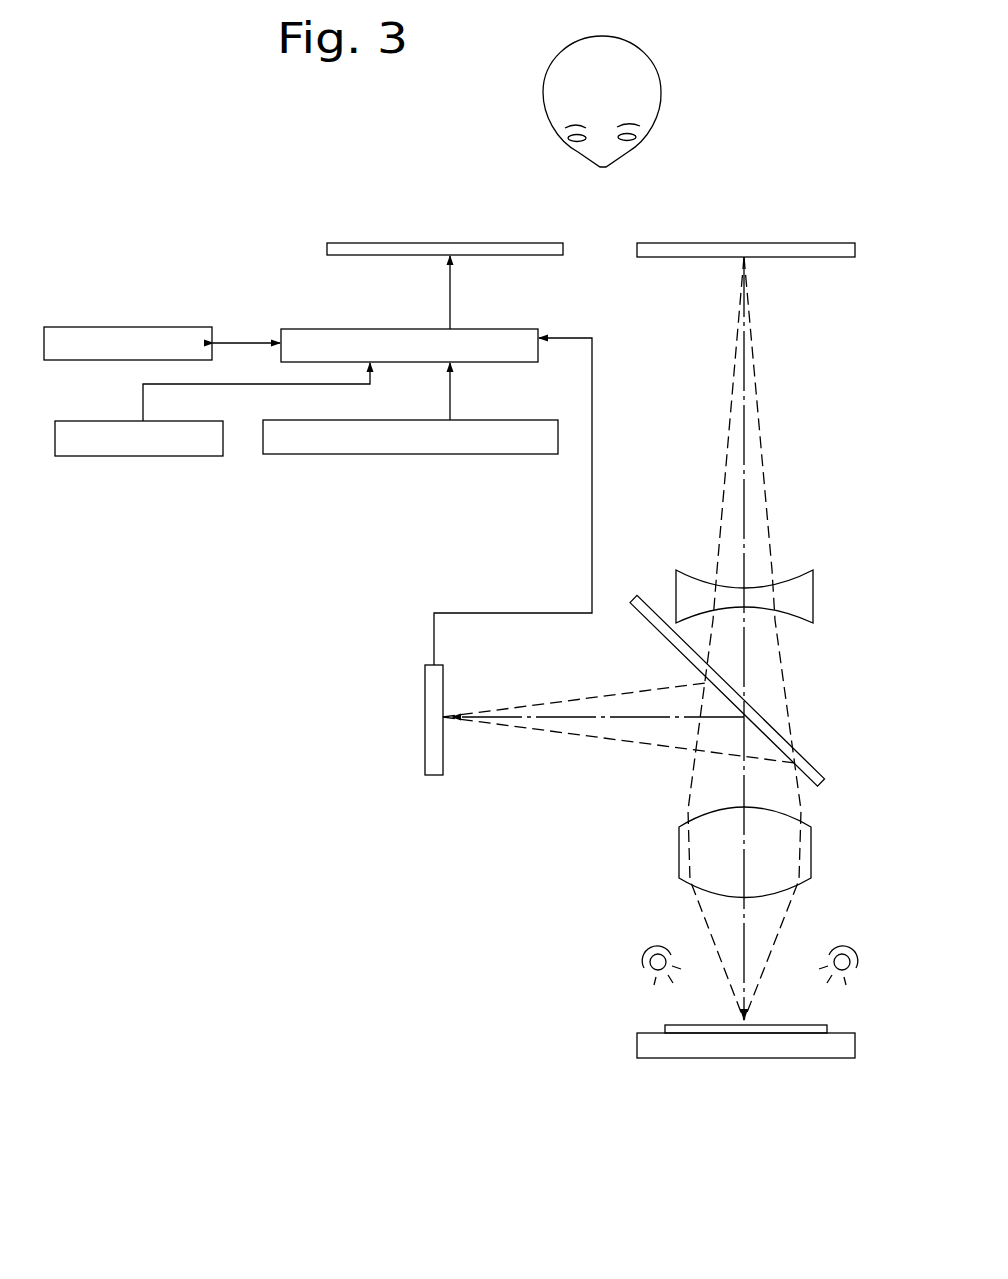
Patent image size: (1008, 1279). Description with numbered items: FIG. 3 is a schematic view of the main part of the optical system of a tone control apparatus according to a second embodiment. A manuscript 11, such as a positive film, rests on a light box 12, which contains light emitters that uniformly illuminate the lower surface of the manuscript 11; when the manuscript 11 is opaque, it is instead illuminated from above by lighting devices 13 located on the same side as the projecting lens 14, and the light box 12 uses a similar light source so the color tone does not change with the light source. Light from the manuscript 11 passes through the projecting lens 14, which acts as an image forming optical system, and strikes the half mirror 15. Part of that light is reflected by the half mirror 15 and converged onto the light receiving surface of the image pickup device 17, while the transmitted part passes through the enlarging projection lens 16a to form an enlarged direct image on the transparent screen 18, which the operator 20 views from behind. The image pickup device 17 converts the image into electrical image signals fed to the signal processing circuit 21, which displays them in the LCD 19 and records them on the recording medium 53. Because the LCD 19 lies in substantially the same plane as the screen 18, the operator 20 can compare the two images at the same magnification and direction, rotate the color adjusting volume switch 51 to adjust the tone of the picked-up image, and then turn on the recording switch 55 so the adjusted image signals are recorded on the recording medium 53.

The manuscript 11 is at (818, 1025).
The light box 12 is at (825, 1050).
The lighting device 13 is at (648, 963).
The projecting lens 14 is at (808, 858).
The half mirror 15 is at (822, 787).
The enlarging projection lens 16a is at (800, 612).
The image pickup device 17 is at (437, 775).
The transparent screen 18 is at (825, 258).
The LCD 19 is at (537, 256).
The operator 20 is at (661, 112).
The signal processing circuit 21 is at (334, 328).
The color adjusting volume switch 51 is at (290, 455).
The recording medium 53 is at (90, 327).
The recording switch 55 is at (90, 456).